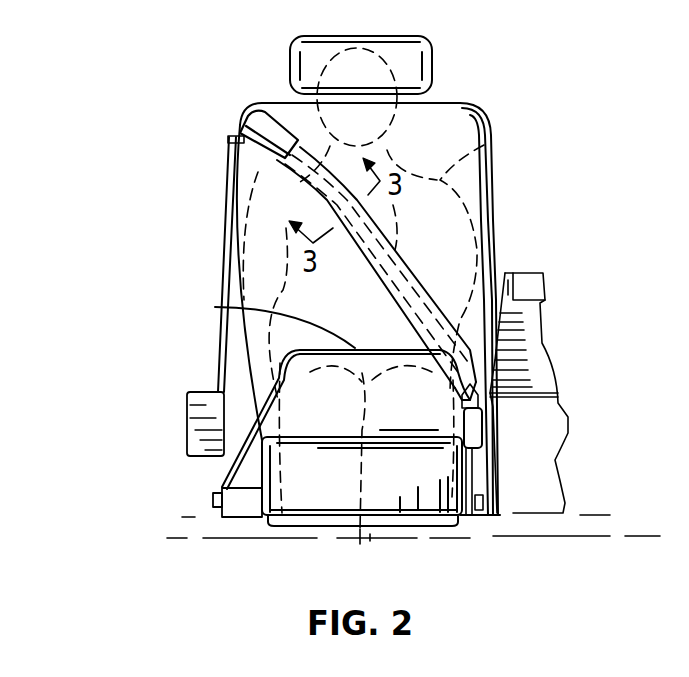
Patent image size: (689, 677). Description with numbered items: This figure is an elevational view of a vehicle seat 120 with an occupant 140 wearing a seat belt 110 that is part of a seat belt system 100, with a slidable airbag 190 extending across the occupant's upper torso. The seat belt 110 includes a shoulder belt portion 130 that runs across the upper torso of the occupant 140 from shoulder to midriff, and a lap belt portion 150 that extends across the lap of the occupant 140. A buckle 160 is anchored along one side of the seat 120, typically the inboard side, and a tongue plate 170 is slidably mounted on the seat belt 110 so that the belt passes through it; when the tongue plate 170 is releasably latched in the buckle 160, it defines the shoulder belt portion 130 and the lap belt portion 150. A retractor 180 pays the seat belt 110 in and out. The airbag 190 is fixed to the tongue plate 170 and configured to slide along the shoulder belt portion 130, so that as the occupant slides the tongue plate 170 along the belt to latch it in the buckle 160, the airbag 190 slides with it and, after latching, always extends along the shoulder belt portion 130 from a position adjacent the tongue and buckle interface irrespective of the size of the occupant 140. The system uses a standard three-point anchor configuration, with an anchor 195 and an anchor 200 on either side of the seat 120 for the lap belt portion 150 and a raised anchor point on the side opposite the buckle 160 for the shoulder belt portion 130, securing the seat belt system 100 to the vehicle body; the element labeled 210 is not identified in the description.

The seat belt system 100 is at (212, 207).
The seat belt 110 is at (223, 258).
The seat 120 is at (452, 139).
The shoulder belt portion 130 is at (280, 117).
The occupant 140 is at (484, 145).
The lap belt portion 150 is at (215, 307).
The buckle 160 is at (483, 440).
The tongue plate 170 is at (470, 392).
The retractor 180 is at (190, 423).
The airbag 190 is at (408, 247).
The anchor 195 is at (478, 510).
The anchor 200 is at (215, 498).
The belt clip 210 is at (232, 139).